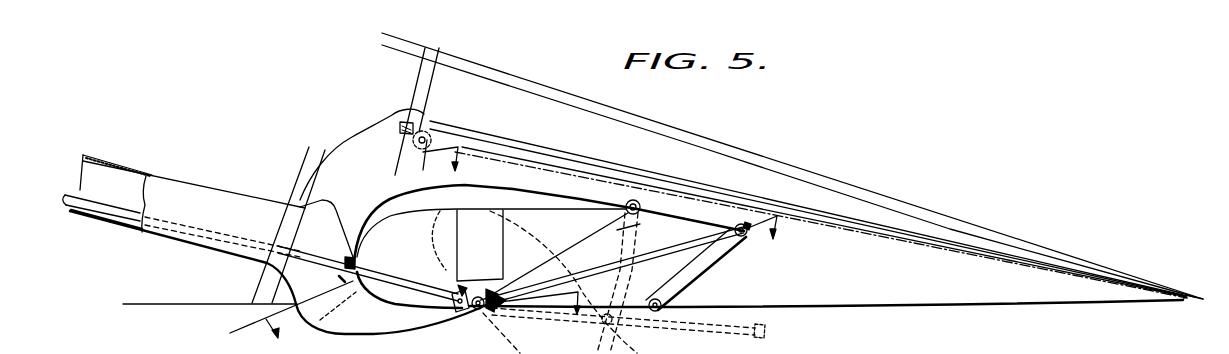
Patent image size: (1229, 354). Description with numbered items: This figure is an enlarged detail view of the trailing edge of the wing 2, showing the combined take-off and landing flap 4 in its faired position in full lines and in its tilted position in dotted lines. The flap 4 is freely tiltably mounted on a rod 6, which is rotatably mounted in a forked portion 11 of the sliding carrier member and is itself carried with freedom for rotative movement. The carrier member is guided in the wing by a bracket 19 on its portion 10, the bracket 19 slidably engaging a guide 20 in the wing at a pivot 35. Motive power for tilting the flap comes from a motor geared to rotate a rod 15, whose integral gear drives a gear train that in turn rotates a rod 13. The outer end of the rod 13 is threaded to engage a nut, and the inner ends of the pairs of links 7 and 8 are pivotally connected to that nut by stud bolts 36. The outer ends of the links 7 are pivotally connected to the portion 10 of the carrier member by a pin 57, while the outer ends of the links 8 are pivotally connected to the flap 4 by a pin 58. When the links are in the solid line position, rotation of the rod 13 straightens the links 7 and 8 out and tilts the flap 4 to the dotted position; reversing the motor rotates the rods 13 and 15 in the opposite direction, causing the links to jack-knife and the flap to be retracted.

The wing 2 is at (841, 183).
The flap 4 is at (948, 299).
The rod 6 is at (405, 317).
The links 7 is at (607, 206).
The links 8 is at (690, 272).
The portion of member 5 10 is at (541, 180).
The forked portion 11 is at (427, 320).
The rod 13 is at (602, 272).
The rod 15 is at (85, 201).
The bracket 19 is at (404, 153).
The guide 20 is at (530, 149).
The pivot 35 is at (405, 160).
The stud bolts 36 is at (746, 236).
The pin 57 is at (641, 199).
The pin 58 is at (658, 311).